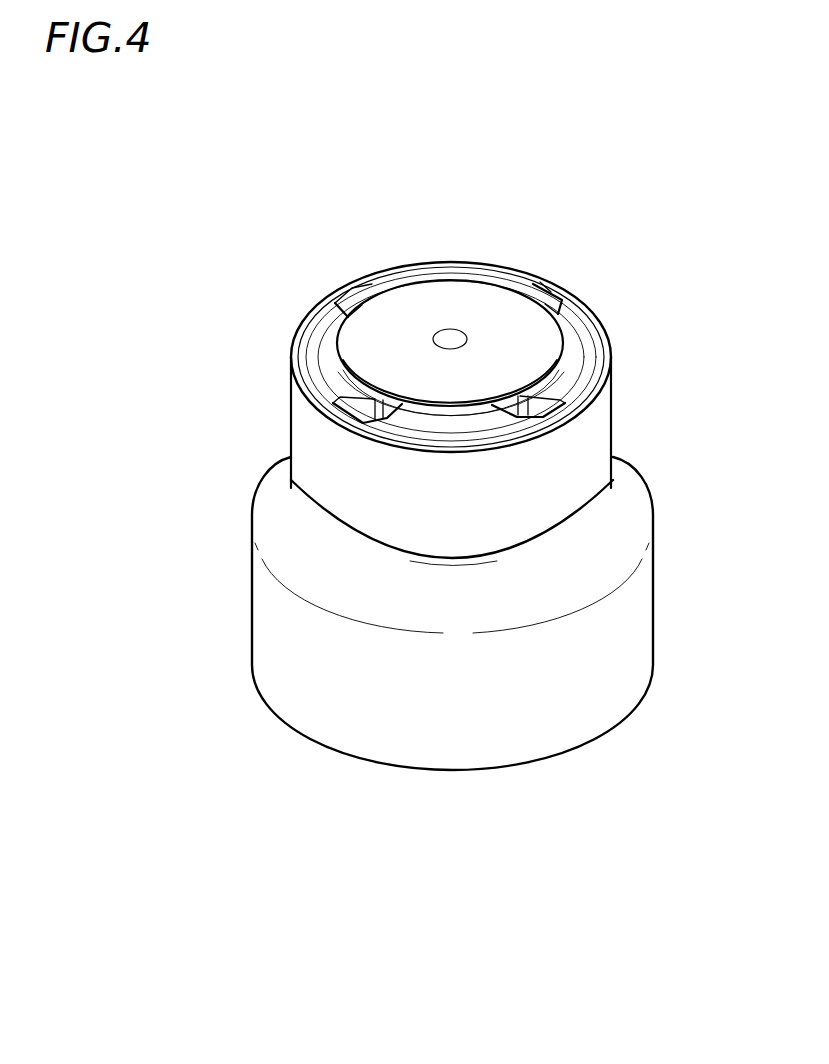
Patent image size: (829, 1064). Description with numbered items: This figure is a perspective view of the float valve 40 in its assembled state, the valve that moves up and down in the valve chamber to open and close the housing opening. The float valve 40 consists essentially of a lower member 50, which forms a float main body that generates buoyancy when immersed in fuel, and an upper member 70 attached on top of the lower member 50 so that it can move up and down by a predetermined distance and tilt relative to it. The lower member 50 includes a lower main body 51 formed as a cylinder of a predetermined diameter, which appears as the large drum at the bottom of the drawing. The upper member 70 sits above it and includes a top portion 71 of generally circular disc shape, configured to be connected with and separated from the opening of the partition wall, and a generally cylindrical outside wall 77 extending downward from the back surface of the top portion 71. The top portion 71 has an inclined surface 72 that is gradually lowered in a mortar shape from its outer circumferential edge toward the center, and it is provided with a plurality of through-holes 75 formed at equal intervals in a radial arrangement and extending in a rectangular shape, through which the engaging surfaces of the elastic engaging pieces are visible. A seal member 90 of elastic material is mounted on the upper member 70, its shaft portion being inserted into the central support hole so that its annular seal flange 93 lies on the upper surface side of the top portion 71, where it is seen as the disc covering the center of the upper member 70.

The float valve 40 is at (469, 361).
The lower member 50 is at (436, 613).
The lower main body 51 is at (635, 623).
The upper member 70 is at (469, 373).
The top portion 71 is at (593, 317).
The inclined surface 72 is at (325, 333).
The through-holes 75 is at (345, 292).
The outside wall 77 is at (303, 442).
The seal member 90 is at (483, 274).
The seal flange 93 is at (395, 300).